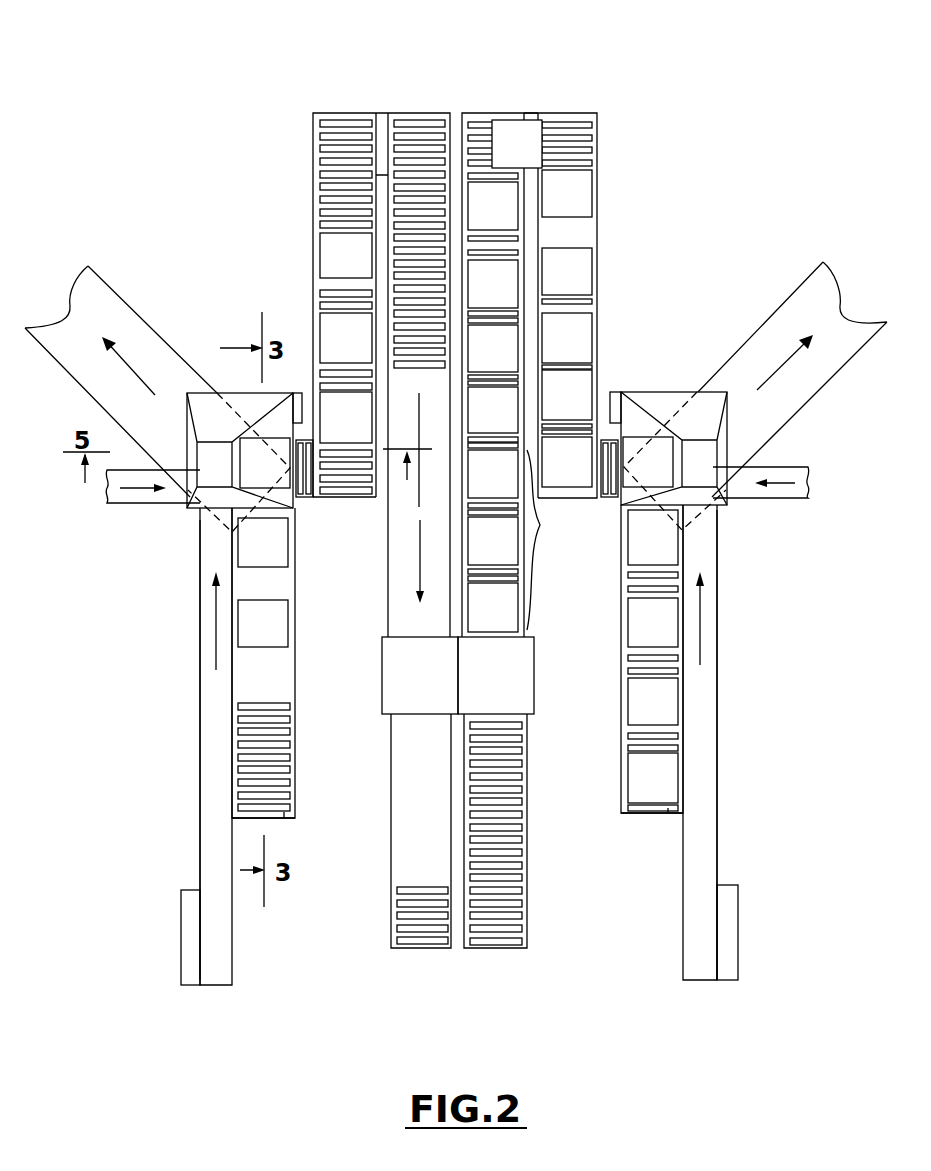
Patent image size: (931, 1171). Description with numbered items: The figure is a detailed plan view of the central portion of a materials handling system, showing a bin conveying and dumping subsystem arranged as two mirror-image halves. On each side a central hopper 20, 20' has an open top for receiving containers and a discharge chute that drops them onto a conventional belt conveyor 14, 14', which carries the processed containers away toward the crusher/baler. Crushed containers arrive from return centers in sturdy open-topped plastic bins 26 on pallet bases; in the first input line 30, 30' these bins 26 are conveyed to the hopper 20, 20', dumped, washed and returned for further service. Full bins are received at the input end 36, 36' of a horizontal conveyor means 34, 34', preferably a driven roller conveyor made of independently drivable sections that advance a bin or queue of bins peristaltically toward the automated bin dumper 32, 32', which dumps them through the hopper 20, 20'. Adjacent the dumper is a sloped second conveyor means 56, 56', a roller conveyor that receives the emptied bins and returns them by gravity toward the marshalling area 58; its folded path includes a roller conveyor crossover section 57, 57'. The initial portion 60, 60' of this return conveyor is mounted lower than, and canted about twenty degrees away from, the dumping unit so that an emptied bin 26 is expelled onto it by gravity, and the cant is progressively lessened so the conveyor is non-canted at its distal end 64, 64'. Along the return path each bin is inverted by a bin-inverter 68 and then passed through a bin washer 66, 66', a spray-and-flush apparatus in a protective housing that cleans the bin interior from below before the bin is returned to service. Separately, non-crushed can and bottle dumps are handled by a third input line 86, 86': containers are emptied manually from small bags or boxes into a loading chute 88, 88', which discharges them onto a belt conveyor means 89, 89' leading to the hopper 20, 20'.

The belt conveyor 14 is at (121, 363).
The belt conveyor 14' is at (792, 364).
The central hopper 20 is at (230, 423).
The central hopper 20' is at (674, 441).
The bin 26 is at (333, 348).
The first input line 30 is at (298, 813).
The first input line 30' is at (650, 830).
The automated bin dumper 32 is at (281, 347).
The automated bin dumper 32' is at (636, 370).
The horizontal conveyor means 34 is at (290, 663).
The horizontal conveyor means 34' is at (624, 659).
The input end 36 is at (310, 837).
The input end 36' is at (642, 858).
The second conveyor means 56 is at (347, 375).
The second conveyor means 56' is at (565, 375).
The roller conveyor crossover section 57 is at (369, 282).
The roller conveyor crossover section 57' is at (536, 89).
The marshalling area 58 is at (430, 1057).
The initial portion 60 is at (321, 494).
The initial portion 60' is at (581, 491).
The distal end 64 is at (421, 857).
The distal end 64' is at (492, 857).
The bin washer 66 is at (420, 675).
The bin washer 66' is at (496, 675).
The bin-inverter 68 is at (553, 540).
The third input line 86 is at (164, 750).
The third input line 86' is at (755, 745).
The loading chute 88 is at (164, 937).
The loading chute 88' is at (761, 930).
The conveyor means 89 is at (180, 746).
The conveyor means 89' is at (738, 742).